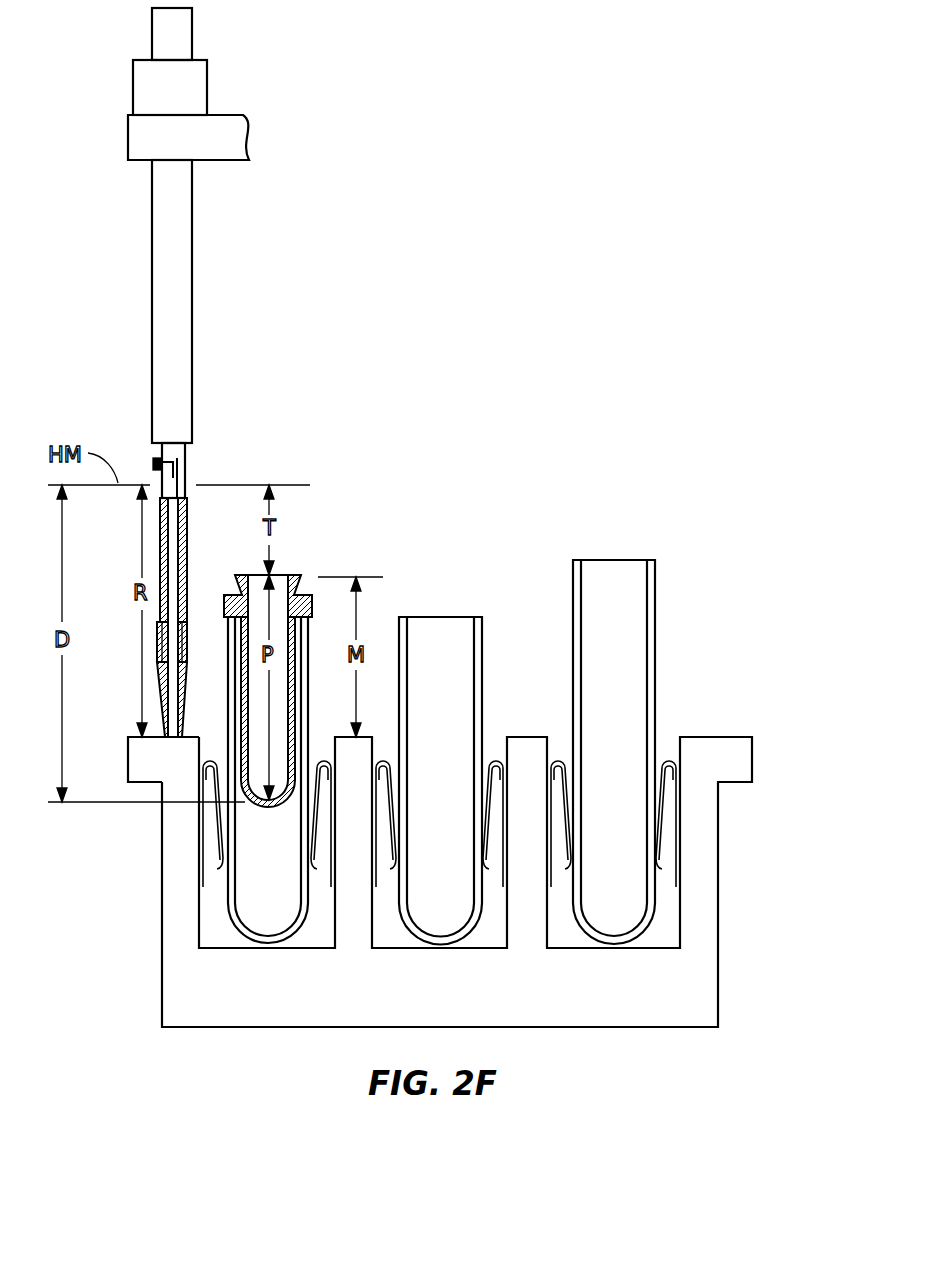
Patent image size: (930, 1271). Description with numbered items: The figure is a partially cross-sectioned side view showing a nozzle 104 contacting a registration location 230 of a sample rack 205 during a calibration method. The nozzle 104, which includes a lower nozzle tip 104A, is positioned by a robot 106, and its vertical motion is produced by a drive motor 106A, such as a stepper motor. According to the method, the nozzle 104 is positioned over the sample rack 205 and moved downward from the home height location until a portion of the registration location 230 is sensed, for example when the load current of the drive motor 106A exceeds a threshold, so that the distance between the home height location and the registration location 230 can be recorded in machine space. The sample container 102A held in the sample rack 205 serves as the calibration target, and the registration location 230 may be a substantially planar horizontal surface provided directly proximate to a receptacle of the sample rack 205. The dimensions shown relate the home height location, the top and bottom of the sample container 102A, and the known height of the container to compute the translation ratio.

The drive motor 106A is at (158, 58).
The robot 106 is at (252, 108).
The nozzle 104 is at (220, 585).
The nozzle tip 104A is at (188, 725).
The sample container 102A is at (311, 571).
The registration location 230 is at (138, 737).
The sample rack 205 is at (160, 882).